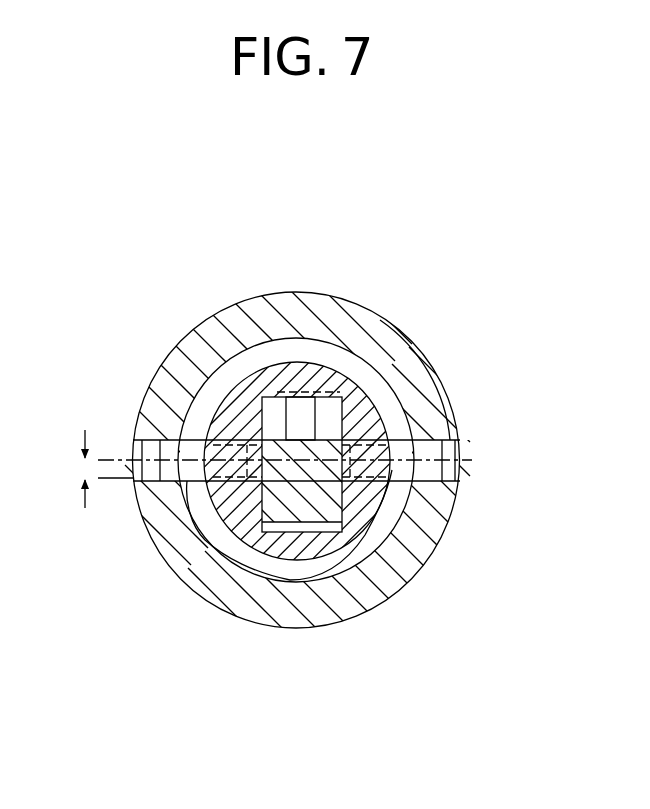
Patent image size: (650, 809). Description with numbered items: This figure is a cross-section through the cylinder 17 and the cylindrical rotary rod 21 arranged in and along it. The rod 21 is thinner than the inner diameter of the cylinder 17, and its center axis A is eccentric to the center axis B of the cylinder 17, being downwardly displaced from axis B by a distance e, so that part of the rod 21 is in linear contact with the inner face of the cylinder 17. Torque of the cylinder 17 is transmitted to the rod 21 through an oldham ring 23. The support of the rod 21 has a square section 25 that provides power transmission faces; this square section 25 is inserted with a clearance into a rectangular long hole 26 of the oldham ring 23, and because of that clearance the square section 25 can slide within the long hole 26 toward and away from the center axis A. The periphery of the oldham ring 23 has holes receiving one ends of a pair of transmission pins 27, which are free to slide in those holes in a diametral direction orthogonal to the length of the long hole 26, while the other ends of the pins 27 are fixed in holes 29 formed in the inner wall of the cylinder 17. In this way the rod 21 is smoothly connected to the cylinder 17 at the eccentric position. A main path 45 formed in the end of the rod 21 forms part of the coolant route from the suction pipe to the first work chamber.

The cylinder 17 is at (436, 366).
The rotary rod 21 is at (341, 560).
The oldham ring 23 is at (265, 366).
The square section 25 is at (288, 520).
The rectangular long hole 26 is at (262, 407).
The transmission pins 27 is at (172, 474).
The holes 29 is at (146, 438).
The main path 45 is at (303, 417).
The distance e is at (92, 469).
The center axis A is at (111, 480).
The center axis B is at (112, 459).